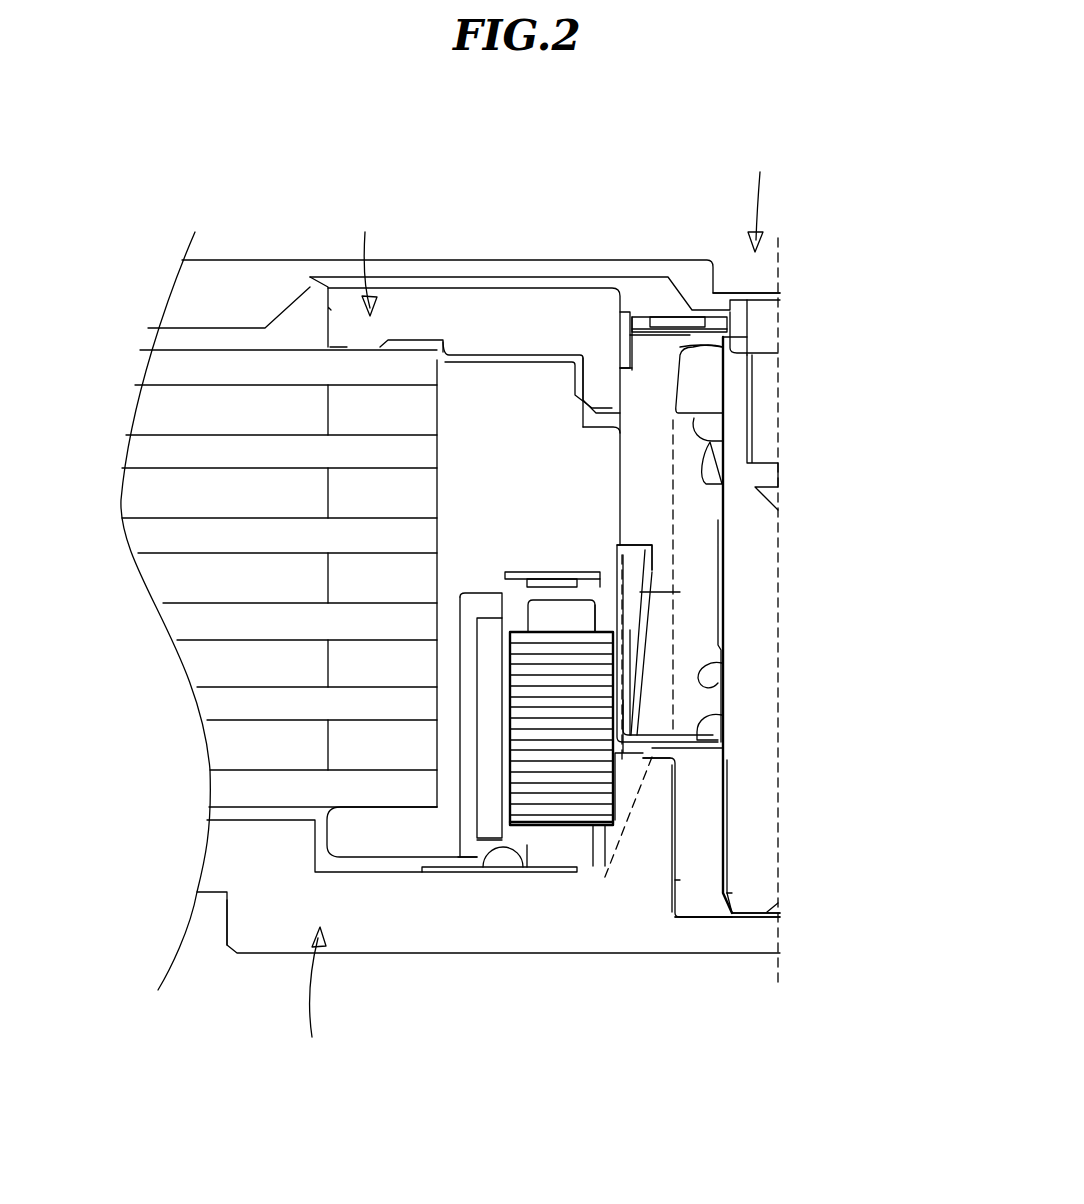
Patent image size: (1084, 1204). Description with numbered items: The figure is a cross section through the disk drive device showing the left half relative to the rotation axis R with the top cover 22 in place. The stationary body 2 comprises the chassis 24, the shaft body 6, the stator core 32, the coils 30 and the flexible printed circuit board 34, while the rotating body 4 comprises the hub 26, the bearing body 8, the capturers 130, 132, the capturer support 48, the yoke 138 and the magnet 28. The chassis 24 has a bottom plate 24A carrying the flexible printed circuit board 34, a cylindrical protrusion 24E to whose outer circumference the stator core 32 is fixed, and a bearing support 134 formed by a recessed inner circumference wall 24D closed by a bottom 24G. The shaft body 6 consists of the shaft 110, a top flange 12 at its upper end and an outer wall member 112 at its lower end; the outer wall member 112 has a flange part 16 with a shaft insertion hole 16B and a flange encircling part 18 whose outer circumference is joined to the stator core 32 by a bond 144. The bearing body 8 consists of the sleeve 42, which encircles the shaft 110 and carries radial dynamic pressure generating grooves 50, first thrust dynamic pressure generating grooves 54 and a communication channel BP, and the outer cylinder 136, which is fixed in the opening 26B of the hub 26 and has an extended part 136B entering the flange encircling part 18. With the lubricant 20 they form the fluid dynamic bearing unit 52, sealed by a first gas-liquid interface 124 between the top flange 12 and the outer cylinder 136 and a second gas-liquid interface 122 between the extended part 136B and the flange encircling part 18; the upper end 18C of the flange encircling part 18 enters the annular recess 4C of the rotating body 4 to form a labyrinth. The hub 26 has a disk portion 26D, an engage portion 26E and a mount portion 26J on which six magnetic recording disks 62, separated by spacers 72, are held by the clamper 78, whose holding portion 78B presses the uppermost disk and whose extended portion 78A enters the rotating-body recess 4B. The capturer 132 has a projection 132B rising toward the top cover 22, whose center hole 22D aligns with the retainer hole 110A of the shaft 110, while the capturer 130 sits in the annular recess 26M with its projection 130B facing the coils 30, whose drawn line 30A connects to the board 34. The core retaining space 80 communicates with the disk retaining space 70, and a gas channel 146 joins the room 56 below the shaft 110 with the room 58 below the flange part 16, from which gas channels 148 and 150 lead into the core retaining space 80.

The stationary body 2 is at (316, 996).
The rotating body 4 is at (533, 462).
The rotating-body recess 4B is at (608, 397).
The annular recess 4C is at (645, 550).
The shaft body 6 is at (756, 198).
The bearing body 8 is at (805, 625).
The sleeve 42 is at (735, 625).
The fluid dynamic bearing unit 52 is at (735, 625).
The top flange 12 is at (700, 395).
The flange part 16 is at (720, 750).
The shaft insertion hole 16B is at (727, 820).
The flange encircling part 18 is at (625, 797).
The upper end 18C is at (628, 545).
The lubricant 20 is at (670, 563).
The top cover 22 is at (257, 288).
The center hole 22D is at (750, 300).
The chassis 24 is at (210, 870).
The bottom plate 24A is at (270, 913).
The inner circumference wall 24D is at (660, 837).
The protrusion 24E is at (643, 760).
The bottom 24G is at (777, 940).
The hub 26 is at (425, 598).
The disk portion 26D is at (545, 411).
The opening 26B is at (583, 452).
The engage portion 26E is at (447, 790).
The mount portion 26J is at (345, 838).
The annular recess 26M is at (502, 607).
The magnet 28 is at (492, 822).
The coils 30 is at (480, 612).
The drawn line 30A is at (527, 870).
The stator core 32 is at (552, 787).
The flexible printed circuit board 34 is at (443, 873).
The capturer support 48 is at (623, 345).
The radial dynamic pressure generating grooves 50 is at (720, 485).
The first thrust dynamic pressure generating grooves 54 is at (720, 437).
The room 56 is at (753, 935).
The room 58 is at (652, 752).
The magnetic recording disks 62 is at (212, 367).
The disk retaining space 70 is at (193, 340).
The spacers 72 is at (392, 407).
The clamper 78 is at (497, 305).
The extended portion 78A is at (580, 400).
The holding portion 78B is at (365, 340).
The core retaining space 80 is at (528, 612).
The shaft 110 is at (758, 890).
The retainer hole 110A is at (747, 323).
The outer wall member 112 is at (821, 857).
The second gas-liquid interface 122 is at (640, 632).
The first gas-liquid interface 124 is at (697, 347).
The capturer 130 is at (541, 521).
The capturer projection 130B is at (548, 572).
The capturer 132 is at (672, 276).
The capturer projection 132B is at (670, 320).
The bearing support 134 is at (695, 918).
The outer cylinder 136 is at (788, 642).
The extended part 136B is at (652, 620).
The yoke 138 is at (467, 837).
The bond 144 is at (612, 610).
The gas channel 146 is at (677, 880).
The gas channel 148 is at (600, 585).
The gas channel 150 is at (617, 835).
The communication channel BP is at (660, 592).
The rotation axis R is at (777, 597).